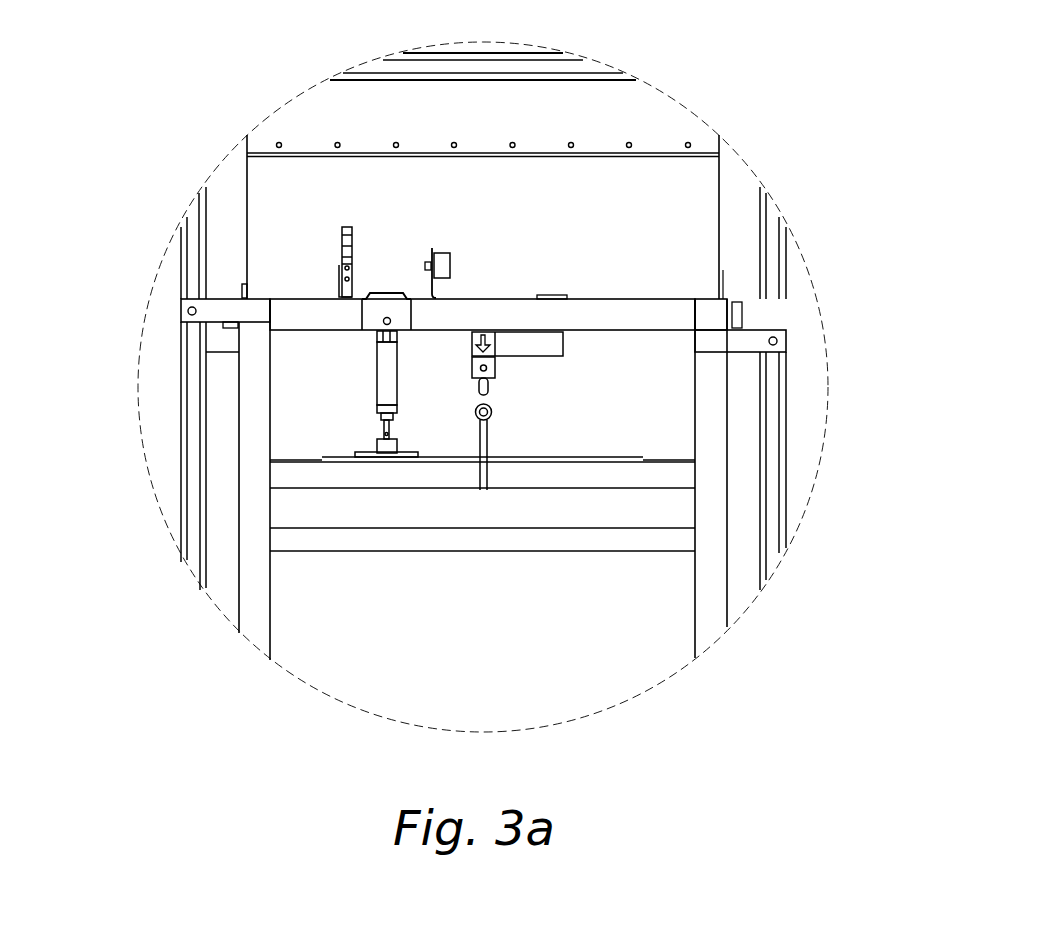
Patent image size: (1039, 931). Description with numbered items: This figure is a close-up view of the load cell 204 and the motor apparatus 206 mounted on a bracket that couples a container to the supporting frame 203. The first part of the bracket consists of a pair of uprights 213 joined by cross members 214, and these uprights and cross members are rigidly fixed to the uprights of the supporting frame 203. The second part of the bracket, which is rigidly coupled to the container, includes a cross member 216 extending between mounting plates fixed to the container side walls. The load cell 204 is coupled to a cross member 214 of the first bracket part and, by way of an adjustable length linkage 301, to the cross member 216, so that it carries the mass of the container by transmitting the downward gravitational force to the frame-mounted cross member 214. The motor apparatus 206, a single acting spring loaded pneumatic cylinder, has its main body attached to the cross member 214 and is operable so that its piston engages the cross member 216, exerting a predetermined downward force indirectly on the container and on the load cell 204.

The supporting frame 203 is at (770, 471).
The load cell 204 is at (533, 342).
The motor apparatus 206 is at (378, 352).
The uprights 213 is at (257, 577).
The cross members 214 is at (680, 321).
The cross member 216 is at (278, 475).
The adjustable length linkage 301 is at (483, 432).